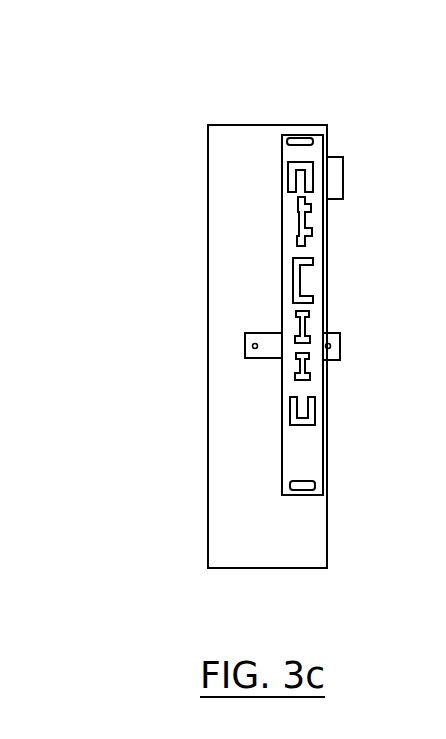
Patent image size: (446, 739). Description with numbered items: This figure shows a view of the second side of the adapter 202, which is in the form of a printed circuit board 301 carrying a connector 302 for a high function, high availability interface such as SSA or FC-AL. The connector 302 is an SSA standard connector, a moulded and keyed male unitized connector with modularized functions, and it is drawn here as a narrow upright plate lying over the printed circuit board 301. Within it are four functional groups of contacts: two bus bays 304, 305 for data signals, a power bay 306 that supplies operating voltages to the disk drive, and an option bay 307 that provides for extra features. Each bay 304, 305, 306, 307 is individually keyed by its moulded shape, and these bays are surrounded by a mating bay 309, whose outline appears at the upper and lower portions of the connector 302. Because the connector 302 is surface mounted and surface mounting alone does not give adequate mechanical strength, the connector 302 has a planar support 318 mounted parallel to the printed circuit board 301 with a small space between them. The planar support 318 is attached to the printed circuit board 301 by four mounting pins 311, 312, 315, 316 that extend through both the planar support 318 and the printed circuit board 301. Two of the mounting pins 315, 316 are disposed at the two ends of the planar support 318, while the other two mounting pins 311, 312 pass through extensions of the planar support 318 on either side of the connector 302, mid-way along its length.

The adapter 202 is at (181, 91).
The printed circuit board 301 is at (220, 542).
The connector 302 is at (340, 216).
The bus bay 304 is at (305, 317).
The bus bay 305 is at (305, 367).
The power bay 306 is at (313, 226).
The option bay 307 is at (303, 279).
The mating bay 309 is at (290, 182).
The mounting pin 311 is at (334, 347).
The mounting pin 312 is at (244, 347).
The mounting pin 315 is at (293, 142).
The mounting pin 316 is at (310, 488).
The planar support 318 is at (316, 454).